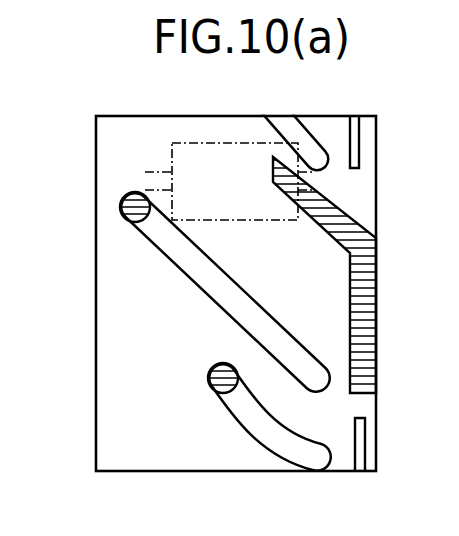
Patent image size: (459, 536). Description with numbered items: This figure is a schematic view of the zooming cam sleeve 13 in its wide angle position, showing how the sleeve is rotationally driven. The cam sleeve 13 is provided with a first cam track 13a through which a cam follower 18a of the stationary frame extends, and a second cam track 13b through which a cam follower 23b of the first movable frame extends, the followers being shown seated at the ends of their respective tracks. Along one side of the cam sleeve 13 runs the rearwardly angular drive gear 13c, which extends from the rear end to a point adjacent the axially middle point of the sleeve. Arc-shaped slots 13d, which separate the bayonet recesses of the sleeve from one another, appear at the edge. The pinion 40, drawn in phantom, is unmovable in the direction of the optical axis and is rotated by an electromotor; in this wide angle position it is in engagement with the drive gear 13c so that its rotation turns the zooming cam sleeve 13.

The zooming cam sleeve 13 is at (116, 303).
The first set of cam tracks 13a is at (168, 252).
The second set of cam tracks 13b is at (260, 430).
The drive gear 13c is at (371, 305).
The arc-shaped slots 13d is at (346, 138).
The cam follower 18a is at (124, 198).
The cam follower 23b is at (208, 378).
The pinion 40 is at (196, 168).